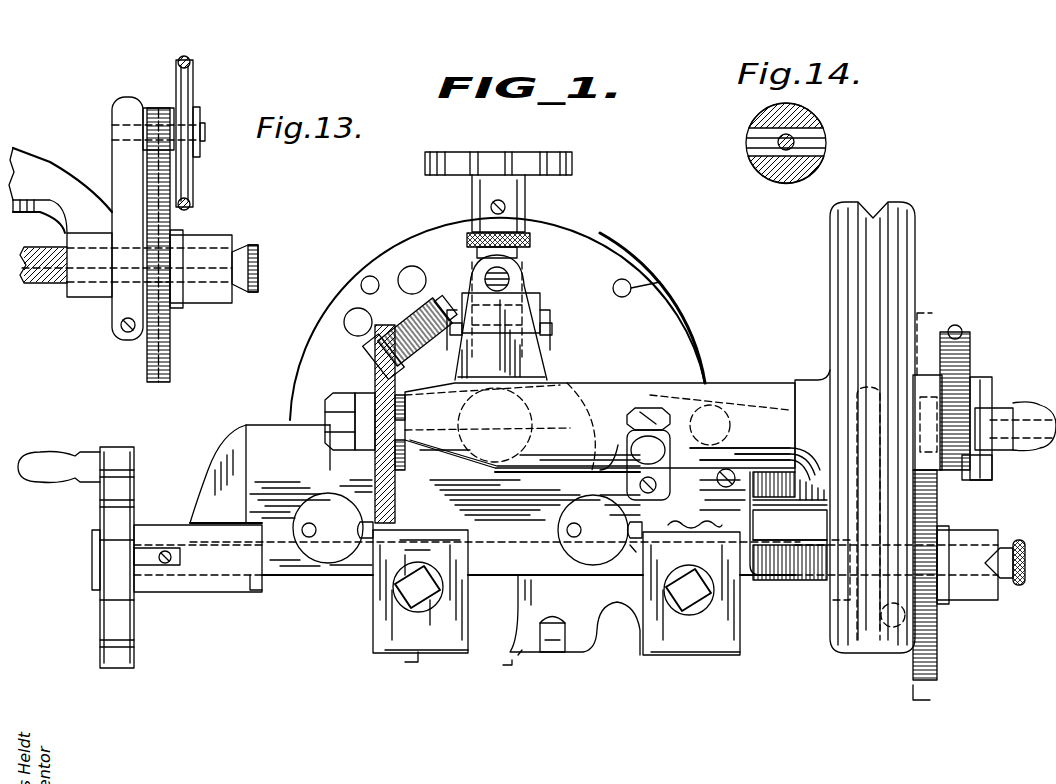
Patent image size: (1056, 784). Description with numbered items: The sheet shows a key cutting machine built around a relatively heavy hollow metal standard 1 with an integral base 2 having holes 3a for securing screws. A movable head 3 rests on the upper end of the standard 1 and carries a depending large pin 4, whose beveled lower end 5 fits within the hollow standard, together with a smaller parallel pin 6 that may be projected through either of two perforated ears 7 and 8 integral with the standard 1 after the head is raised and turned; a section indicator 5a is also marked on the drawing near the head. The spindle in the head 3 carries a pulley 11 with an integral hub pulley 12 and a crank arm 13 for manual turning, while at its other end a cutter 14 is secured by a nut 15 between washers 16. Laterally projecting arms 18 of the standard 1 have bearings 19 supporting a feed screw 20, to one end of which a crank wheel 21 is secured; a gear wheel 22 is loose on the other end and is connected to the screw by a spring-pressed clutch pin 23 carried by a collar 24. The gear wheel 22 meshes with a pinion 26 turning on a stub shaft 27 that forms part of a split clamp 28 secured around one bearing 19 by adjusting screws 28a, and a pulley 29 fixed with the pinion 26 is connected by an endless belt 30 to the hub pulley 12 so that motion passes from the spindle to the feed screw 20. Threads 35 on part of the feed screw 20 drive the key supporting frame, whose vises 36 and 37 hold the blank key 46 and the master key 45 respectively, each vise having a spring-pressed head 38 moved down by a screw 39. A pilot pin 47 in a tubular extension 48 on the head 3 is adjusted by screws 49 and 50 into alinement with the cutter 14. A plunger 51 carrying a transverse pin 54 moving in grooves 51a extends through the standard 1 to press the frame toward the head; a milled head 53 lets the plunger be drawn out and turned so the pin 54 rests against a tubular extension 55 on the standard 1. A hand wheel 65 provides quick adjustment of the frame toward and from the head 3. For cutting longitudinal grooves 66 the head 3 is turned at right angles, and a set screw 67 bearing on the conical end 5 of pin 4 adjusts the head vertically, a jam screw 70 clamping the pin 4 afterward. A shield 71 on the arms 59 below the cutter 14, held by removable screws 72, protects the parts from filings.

In FIG. 1, the standard 1 is at (570, 368).
In FIG. 1, the base 2 is at (612, 370).
In FIG. 1, the movable head 3 is at (736, 380).
In FIG. 1, the holes 3a is at (589, 473).
In FIG. 1, the large pin 4 is at (511, 425).
In FIG. 1, the beveled lower end 5 is at (931, 506).
In FIG. 1, the section line 5a is at (361, 285).
In FIG. 1, the small pin 6 is at (712, 404).
In FIG. 1, the perforated ear 7 is at (700, 400).
In FIG. 1, the perforated ear 8 is at (526, 312).
In FIG. 1, the pulley 11 is at (840, 252).
In FIG. 1, the hub pulley 12 is at (990, 475).
In FIG. 1, the crank arm 13 is at (985, 410).
In FIG. 1, the cutter 14 is at (375, 350).
In FIG. 1, the nut 15 is at (355, 400).
In FIG. 1, the washers 16 is at (340, 437).
In FIG. 13, the arms 18 is at (40, 214).
In FIG. 1, the arms 18 is at (228, 444).
In FIG. 13, the bearings 19 is at (85, 298).
In FIG. 1, the bearings 19 is at (232, 592).
In FIG. 1, the feed screw 20 is at (192, 592).
In FIG. 1, the crank wheel 21 is at (120, 668).
In FIG. 13, the gear wheel 22 is at (150, 360).
In FIG. 1, the gear wheel 22 is at (940, 660).
In FIG. 13, the clutch pin 23 is at (246, 292).
In FIG. 1, the clutch pin 23 is at (1015, 585).
In FIG. 13, the collar 24 is at (214, 303).
In FIG. 1, the collar 24 is at (980, 600).
In FIG. 13, the pinion 26 is at (162, 108).
In FIG. 1, the pinion 26 is at (925, 397).
In FIG. 13, the stub shaft 27 is at (205, 140).
In FIG. 13, the split clamp 28 is at (122, 162).
In FIG. 1, the split clamp 28 is at (860, 640).
In FIG. 13, the adjusting screws 28a is at (122, 331).
In FIG. 13, the pulley 29 is at (193, 95).
In FIG. 1, the pulley 29 is at (975, 395).
In FIG. 13, the endless belt 30 is at (190, 60).
In FIG. 1, the endless belt 30 is at (958, 335).
In FIG. 13, the threads 35 is at (35, 284).
In FIG. 1, the threads 35 is at (790, 576).
In FIG. 1, the vise 36 is at (385, 632).
In FIG. 1, the vise 37 is at (718, 640).
In FIG. 1, the spring-pressed head 38 is at (395, 622).
In FIG. 1, the screw 39 is at (405, 600).
In FIG. 1, the master key 45 is at (593, 530).
In FIG. 1, the blank key 46 is at (328, 528).
In FIG. 1, the pilot pin 47 is at (695, 515).
In FIG. 1, the tubular extension 48 is at (685, 465).
In FIG. 1, the screw 49 is at (560, 500).
In FIG. 1, the screw 50 is at (648, 410).
In FIG. 14, the plunger 51 is at (757, 160).
In FIG. 1, the plunger 51 is at (607, 635).
In FIG. 14, the grooves 51a is at (748, 138).
In FIG. 1, the milled head 53 is at (530, 240).
In FIG. 14, the transverse pin 54 is at (796, 140).
In FIG. 1, the transverse pin 54 is at (545, 330).
In FIG. 14, the tubular extension 55 is at (776, 115).
In FIG. 1, the tubular extension 55 is at (458, 330).
In FIG. 1, the arms 59 is at (780, 582).
In FIG. 1, the hand wheel 65 is at (555, 652).
In FIG. 1, the longitudinal grooves 66 is at (463, 538).
In FIG. 1, the set screw 67 is at (470, 232).
In FIG. 1, the jam screw 70 is at (344, 322).
In FIG. 1, the shield 71 is at (272, 440).
In FIG. 1, the screws 72 is at (330, 465).